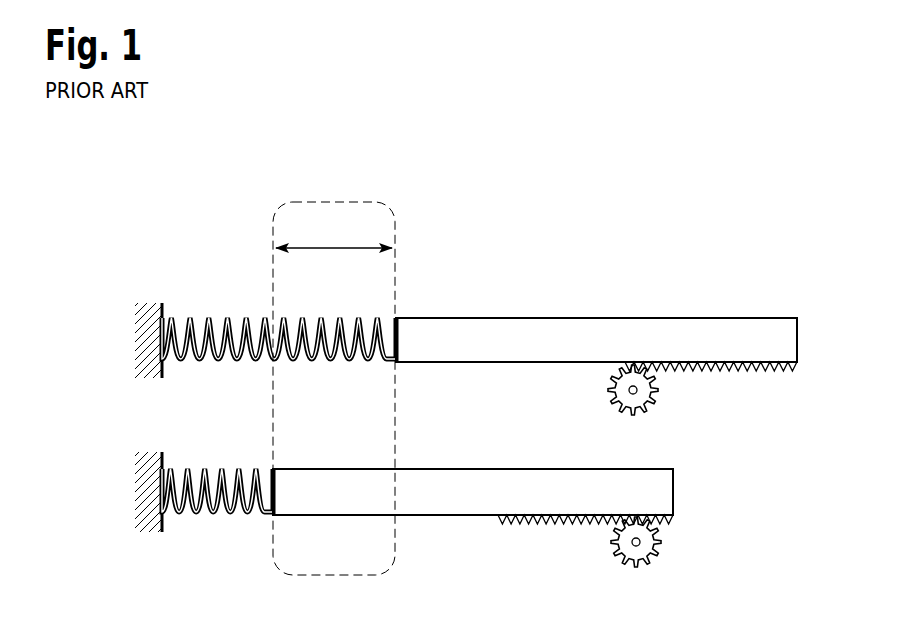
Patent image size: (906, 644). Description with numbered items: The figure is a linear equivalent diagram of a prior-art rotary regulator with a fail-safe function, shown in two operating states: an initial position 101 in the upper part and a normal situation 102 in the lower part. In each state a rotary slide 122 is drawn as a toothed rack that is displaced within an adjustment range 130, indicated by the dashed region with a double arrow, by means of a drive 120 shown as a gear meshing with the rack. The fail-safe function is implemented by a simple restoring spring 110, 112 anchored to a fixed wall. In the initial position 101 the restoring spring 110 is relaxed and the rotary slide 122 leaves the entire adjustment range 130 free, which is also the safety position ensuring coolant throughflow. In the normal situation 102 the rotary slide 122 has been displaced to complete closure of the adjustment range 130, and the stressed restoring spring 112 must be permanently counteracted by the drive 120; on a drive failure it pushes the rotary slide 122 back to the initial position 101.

The initial position 101 is at (120, 356).
The normal situation 102 is at (120, 498).
The restoring spring 110 is at (200, 313).
The restoring spring 112 is at (200, 515).
The drive 120 is at (665, 397).
The rotary slide 122 is at (442, 338).
The adjustment range 130 is at (337, 232).